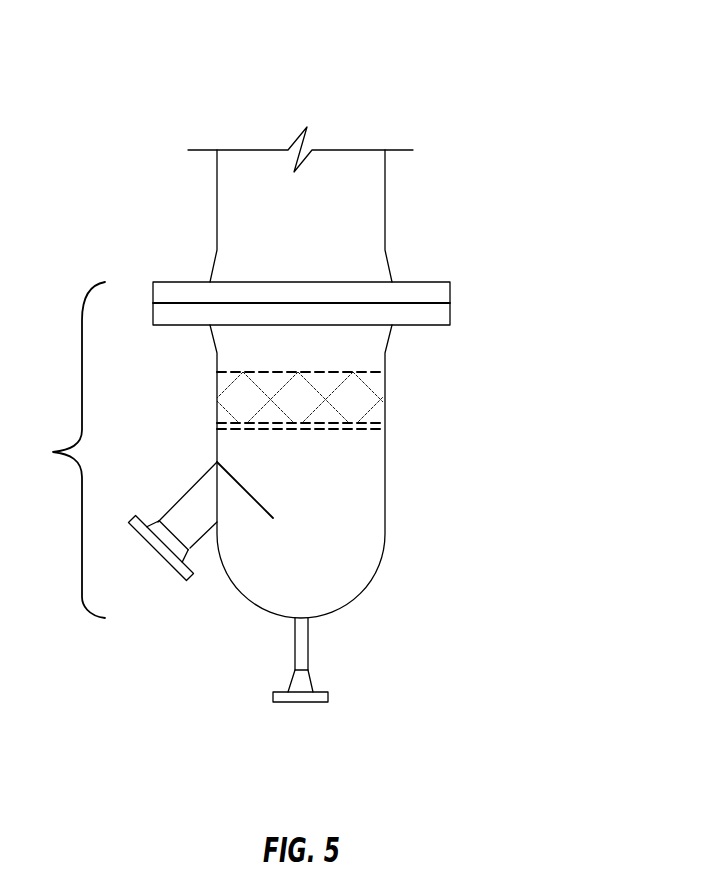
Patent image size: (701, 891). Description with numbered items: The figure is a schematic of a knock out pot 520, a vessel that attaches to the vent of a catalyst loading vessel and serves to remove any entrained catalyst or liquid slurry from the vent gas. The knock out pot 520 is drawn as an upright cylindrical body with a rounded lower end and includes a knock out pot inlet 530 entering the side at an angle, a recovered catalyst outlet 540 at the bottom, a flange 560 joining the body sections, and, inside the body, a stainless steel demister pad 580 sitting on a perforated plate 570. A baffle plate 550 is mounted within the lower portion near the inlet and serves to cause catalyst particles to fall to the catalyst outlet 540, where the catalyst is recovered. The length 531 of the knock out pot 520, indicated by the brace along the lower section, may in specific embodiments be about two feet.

The knock out pot 520 is at (160, 60).
The length 531 is at (54, 450).
The knock out pot inlet 530 is at (152, 560).
The recovered catalyst outlet 540 is at (328, 697).
The baffle plate 550 is at (270, 512).
The flange 560 is at (450, 292).
The perforated plate 570 is at (385, 425).
The stainless steel demister pad 580 is at (217, 372).